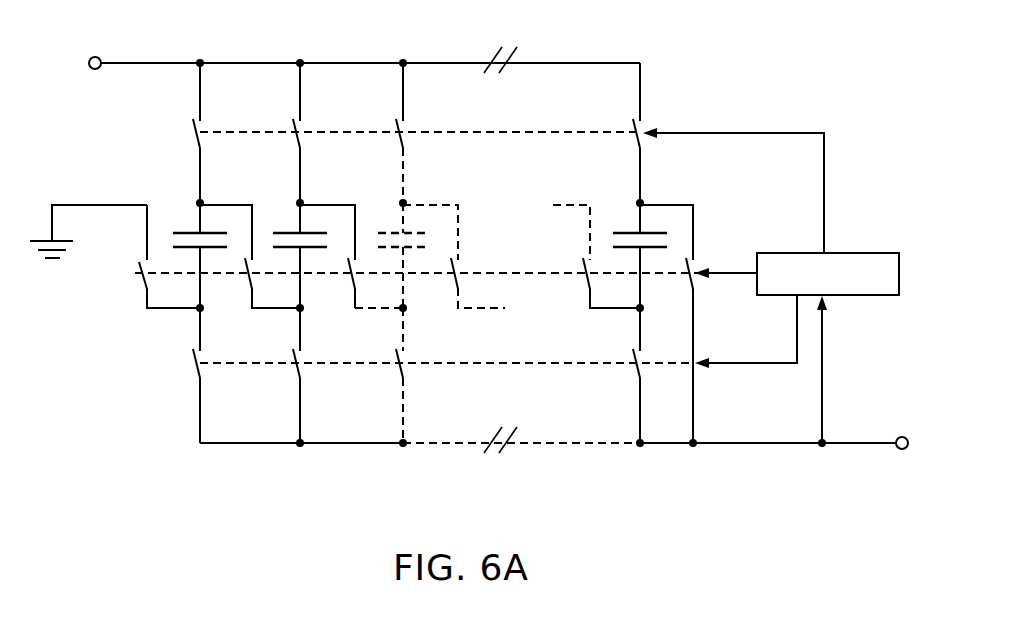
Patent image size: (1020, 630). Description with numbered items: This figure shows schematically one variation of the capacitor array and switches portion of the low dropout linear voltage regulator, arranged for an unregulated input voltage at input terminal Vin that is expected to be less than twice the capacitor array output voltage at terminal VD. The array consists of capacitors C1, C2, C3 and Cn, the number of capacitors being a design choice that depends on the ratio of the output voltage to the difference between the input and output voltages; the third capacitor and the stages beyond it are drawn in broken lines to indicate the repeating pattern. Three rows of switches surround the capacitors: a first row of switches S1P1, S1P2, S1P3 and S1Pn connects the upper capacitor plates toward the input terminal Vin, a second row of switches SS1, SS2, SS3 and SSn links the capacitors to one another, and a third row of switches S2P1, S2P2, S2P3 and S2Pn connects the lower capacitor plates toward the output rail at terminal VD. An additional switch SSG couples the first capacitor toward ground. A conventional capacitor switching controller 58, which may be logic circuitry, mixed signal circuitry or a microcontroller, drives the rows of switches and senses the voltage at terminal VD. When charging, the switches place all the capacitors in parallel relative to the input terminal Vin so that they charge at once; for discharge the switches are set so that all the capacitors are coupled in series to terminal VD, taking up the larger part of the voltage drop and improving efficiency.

The capacitor switching controller 58 is at (848, 253).
The input terminal Vin is at (92, 57).
The capacitor array output terminal VD is at (900, 450).
The first row switch S1P1 is at (193, 127).
The first row switch S1P2 is at (293, 127).
The first row switch S1P3 is at (397, 127).
The first row switch S1Pn is at (634, 127).
The capacitor C1 is at (188, 230).
The capacitor C2 is at (288, 230).
The capacitor C3 is at (388, 230).
The capacitor Cn is at (628, 230).
The switch SSG is at (140, 287).
The second row switch SS1 is at (248, 278).
The second row switch SS2 is at (351, 278).
The second row switch SS3 is at (453, 278).
The second row switch SSn is at (688, 280).
The third row switch S2P1 is at (195, 368).
The third row switch S2P2 is at (295, 368).
The third row switch S2P3 is at (398, 368).
The third row switch S2Pn is at (635, 368).